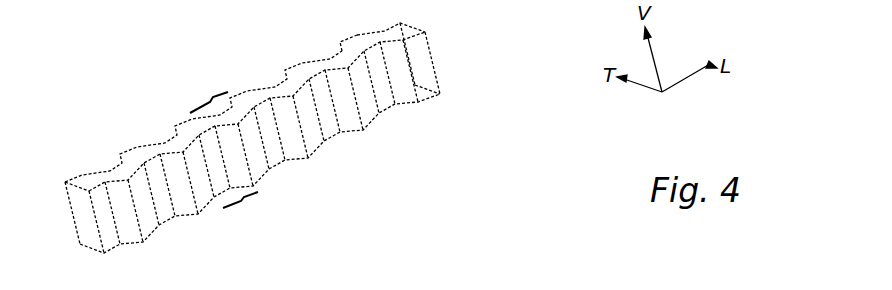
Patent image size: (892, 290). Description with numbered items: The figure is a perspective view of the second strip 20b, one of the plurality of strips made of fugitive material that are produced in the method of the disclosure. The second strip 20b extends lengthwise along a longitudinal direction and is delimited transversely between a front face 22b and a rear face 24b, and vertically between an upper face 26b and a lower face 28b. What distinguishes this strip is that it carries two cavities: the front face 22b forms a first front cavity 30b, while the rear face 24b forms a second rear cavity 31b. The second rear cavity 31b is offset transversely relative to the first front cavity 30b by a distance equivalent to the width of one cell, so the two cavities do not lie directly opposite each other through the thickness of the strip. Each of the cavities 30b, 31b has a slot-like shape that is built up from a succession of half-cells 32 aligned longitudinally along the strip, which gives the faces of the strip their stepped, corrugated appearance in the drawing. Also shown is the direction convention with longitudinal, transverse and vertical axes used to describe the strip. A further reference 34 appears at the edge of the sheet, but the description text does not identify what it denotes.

The second strip 20b is at (450, 119).
The front face 22b is at (290, 71).
The rear face 24b is at (432, 83).
The upper face 26b is at (403, 30).
The lower face 28b is at (316, 156).
The first front cavity 30b is at (373, 113).
The second rear cavity 31b is at (341, 55).
The half-cells 32 is at (207, 100).
The adjacent element 34 is at (168, 0).